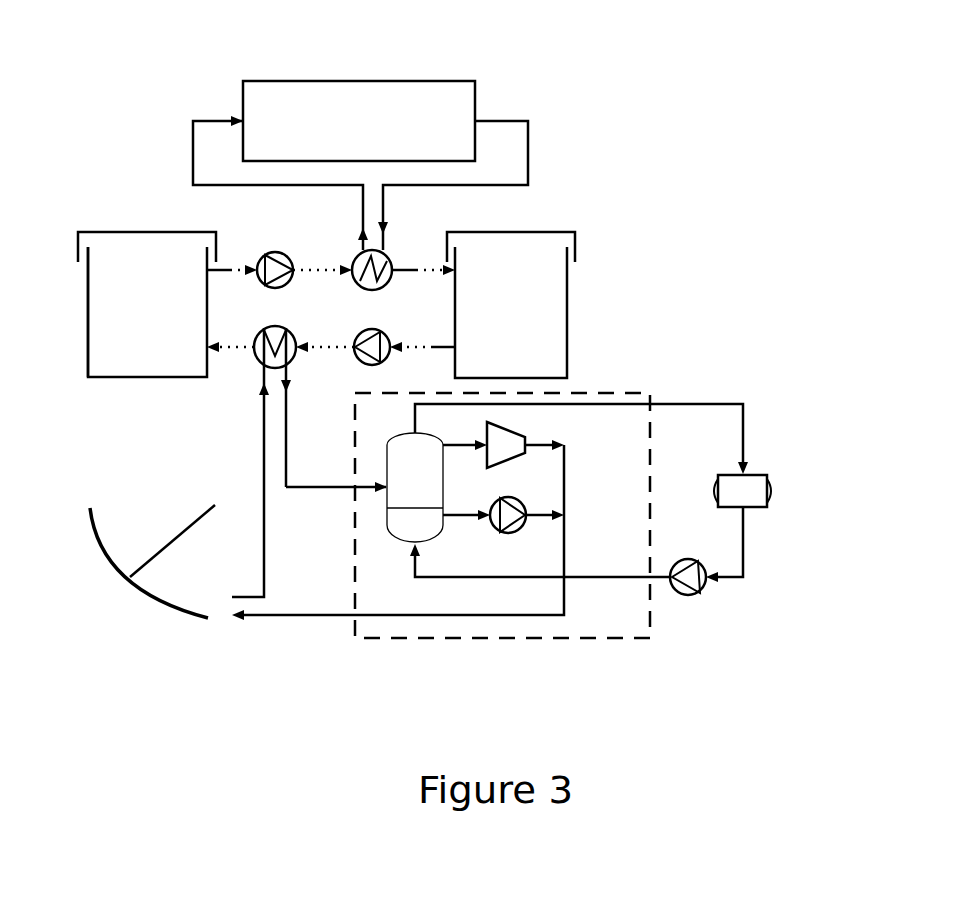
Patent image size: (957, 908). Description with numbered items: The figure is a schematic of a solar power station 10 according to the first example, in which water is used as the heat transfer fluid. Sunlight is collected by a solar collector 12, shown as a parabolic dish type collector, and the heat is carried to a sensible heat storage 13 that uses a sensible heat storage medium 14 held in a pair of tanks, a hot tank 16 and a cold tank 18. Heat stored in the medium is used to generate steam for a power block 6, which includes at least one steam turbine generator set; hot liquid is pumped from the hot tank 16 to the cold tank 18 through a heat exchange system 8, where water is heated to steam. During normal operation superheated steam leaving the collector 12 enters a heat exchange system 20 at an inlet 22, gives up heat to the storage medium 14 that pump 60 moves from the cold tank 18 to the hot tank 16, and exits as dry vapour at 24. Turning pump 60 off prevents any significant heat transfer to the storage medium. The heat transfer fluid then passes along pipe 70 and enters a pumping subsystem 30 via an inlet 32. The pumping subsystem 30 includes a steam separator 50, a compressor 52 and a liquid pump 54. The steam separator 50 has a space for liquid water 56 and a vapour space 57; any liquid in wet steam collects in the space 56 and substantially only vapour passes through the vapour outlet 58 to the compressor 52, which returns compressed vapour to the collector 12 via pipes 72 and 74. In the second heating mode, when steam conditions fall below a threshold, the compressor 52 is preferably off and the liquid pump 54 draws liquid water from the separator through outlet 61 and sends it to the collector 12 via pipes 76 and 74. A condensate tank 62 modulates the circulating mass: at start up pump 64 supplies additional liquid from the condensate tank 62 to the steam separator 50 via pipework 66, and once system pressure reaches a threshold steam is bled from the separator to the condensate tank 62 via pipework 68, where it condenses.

The power block 6 is at (450, 90).
The heat exchange system 8 is at (386, 262).
The solar power station 10 is at (617, 141).
The solar collector 12 is at (128, 585).
The sensible heat storage 13 is at (136, 222).
The sensible heat storage medium 14 is at (120, 357).
The hot tank 16 is at (88, 300).
The cold tank 18 is at (567, 307).
The heat exchange system 20 is at (262, 361).
The heat exchange system inlet 22 is at (264, 413).
The heat exchange system exit 24 is at (287, 402).
The pumping subsystem 30 is at (592, 642).
The inlet 32 is at (385, 490).
The steam separator 50 is at (405, 527).
The compressor 52 is at (510, 442).
The liquid pump 54 is at (512, 534).
The space for liquid water 56 is at (412, 550).
The vapour space 57 is at (427, 487).
The vapour outlet 58 is at (455, 446).
The pump 60 is at (389, 361).
The outlet 61 is at (468, 516).
The condensate tank 62 is at (755, 508).
The pump 64 is at (703, 589).
The pipework 66 is at (540, 516).
The pipework 68 is at (708, 404).
The pipe 70 is at (317, 488).
The pipe 72 is at (548, 438).
The pipe 74 is at (262, 617).
The pipe 76 is at (595, 578).